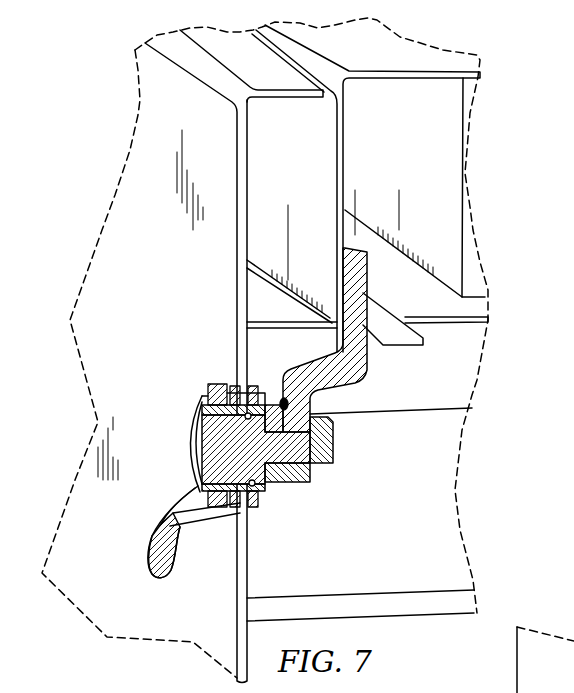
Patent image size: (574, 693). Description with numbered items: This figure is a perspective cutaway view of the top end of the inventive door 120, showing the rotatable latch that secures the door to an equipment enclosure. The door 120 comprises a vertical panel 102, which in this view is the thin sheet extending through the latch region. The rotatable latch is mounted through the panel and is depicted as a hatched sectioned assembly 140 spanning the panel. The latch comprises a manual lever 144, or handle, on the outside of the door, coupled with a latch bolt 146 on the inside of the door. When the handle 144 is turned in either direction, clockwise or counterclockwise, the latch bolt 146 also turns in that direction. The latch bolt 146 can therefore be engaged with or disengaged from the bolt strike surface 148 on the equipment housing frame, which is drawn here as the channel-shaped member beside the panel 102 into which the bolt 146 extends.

The door 120 is at (93, 219).
The vertical panel 102 is at (180, 332).
The bolt strike surface 148 is at (340, 160).
The latch bolt 146 is at (358, 273).
The latch assembly 140 is at (198, 443).
The manual lever 144 is at (152, 547).